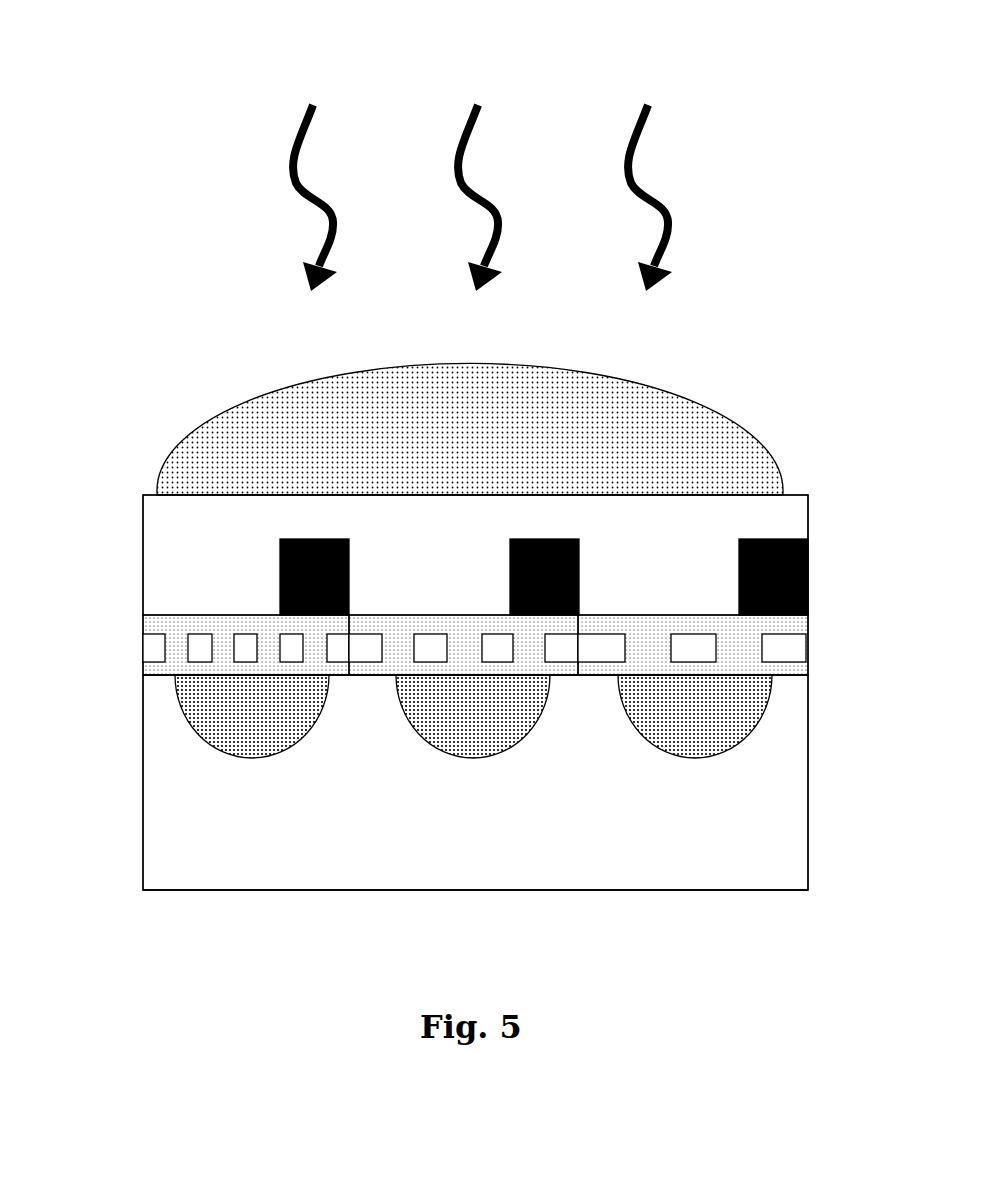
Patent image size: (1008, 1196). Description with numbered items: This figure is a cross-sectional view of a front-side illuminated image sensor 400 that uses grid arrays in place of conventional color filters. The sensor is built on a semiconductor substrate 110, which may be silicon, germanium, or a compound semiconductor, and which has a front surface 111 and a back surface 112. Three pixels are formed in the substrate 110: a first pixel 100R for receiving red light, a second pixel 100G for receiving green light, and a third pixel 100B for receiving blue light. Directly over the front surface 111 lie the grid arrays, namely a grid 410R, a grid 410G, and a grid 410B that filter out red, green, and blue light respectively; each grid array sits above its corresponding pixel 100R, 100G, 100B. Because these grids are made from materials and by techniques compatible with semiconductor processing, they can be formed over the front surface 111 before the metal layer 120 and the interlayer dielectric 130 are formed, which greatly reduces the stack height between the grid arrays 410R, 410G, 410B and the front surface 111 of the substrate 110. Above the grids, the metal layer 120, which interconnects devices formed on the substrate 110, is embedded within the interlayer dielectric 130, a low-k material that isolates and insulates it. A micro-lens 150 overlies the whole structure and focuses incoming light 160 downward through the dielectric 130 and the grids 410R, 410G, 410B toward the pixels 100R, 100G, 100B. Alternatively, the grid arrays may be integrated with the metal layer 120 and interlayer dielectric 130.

The light 160 is at (386, 110).
The front-side illuminated sensor 400 is at (95, 373).
The micro-lens 150 is at (740, 442).
The interlayer dielectric 130 is at (157, 580).
The metal layer 120 is at (280, 600).
The grid 410R is at (143, 662).
The grid 410G is at (400, 628).
The grid 410B is at (767, 628).
The semiconductor substrate 110 is at (142, 830).
The front surface 111 is at (795, 682).
The back surface 112 is at (170, 882).
The first pixel 100R is at (287, 736).
The second pixel 100G is at (505, 736).
The third pixel 100B is at (698, 736).